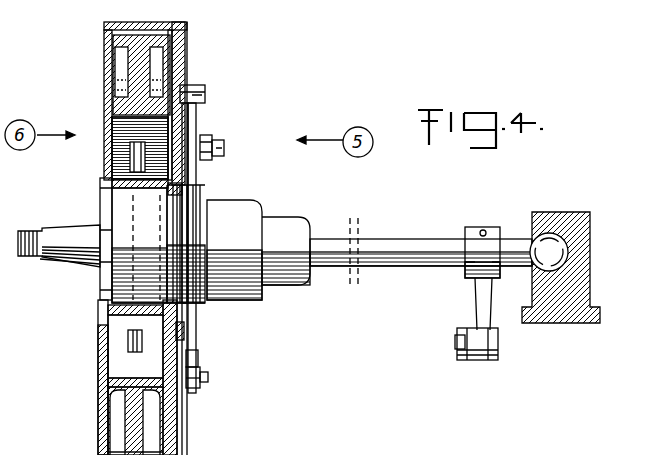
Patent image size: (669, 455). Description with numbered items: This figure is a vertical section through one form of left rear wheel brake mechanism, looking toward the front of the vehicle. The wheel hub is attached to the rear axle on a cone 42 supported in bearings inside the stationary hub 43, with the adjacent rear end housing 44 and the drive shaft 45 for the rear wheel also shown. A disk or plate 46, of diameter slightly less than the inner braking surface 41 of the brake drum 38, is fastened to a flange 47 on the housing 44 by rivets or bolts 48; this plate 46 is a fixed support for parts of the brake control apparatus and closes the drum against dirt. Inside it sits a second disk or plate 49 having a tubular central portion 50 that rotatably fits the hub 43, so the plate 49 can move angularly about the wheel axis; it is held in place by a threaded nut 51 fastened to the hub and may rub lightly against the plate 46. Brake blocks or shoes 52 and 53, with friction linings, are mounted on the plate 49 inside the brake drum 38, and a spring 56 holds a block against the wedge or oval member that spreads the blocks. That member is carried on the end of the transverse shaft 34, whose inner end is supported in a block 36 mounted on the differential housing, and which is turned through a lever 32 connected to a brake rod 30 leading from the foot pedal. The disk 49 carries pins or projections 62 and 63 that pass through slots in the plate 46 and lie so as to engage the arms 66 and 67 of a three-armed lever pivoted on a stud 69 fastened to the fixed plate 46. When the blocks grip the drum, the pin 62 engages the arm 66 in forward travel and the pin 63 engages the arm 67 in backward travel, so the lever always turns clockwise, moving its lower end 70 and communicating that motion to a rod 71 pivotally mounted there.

The brake rod 30 is at (475, 362).
The lever 32 is at (488, 295).
The transverse shaft 34 is at (427, 239).
The block 36 is at (591, 250).
The brake drum 38 is at (128, 24).
The inner braking surface 41 is at (193, 21).
The cone 42 is at (65, 266).
The stationary hub 43 is at (139, 245).
The rear end housing 44 is at (230, 207).
The drive shaft 45 is at (287, 214).
The disk or plate 46 is at (183, 53).
The flange 47 is at (185, 208).
The rivets or bolts 48 is at (184, 332).
The second disk or plate 49 is at (181, 70).
The tubular central portion 50 is at (108, 182).
The threaded nut 51 is at (104, 196).
The brake block or shoe 52 is at (125, 62).
The brake block or shoe 53 is at (133, 428).
The spring 56 is at (128, 342).
The pin or projection 62 is at (203, 87).
The pin or projection 63 is at (193, 190).
The arm 66 is at (198, 110).
The arm 67 is at (195, 150).
The stud 69 is at (216, 143).
The lower end 70 is at (198, 352).
The rod 71 is at (200, 384).